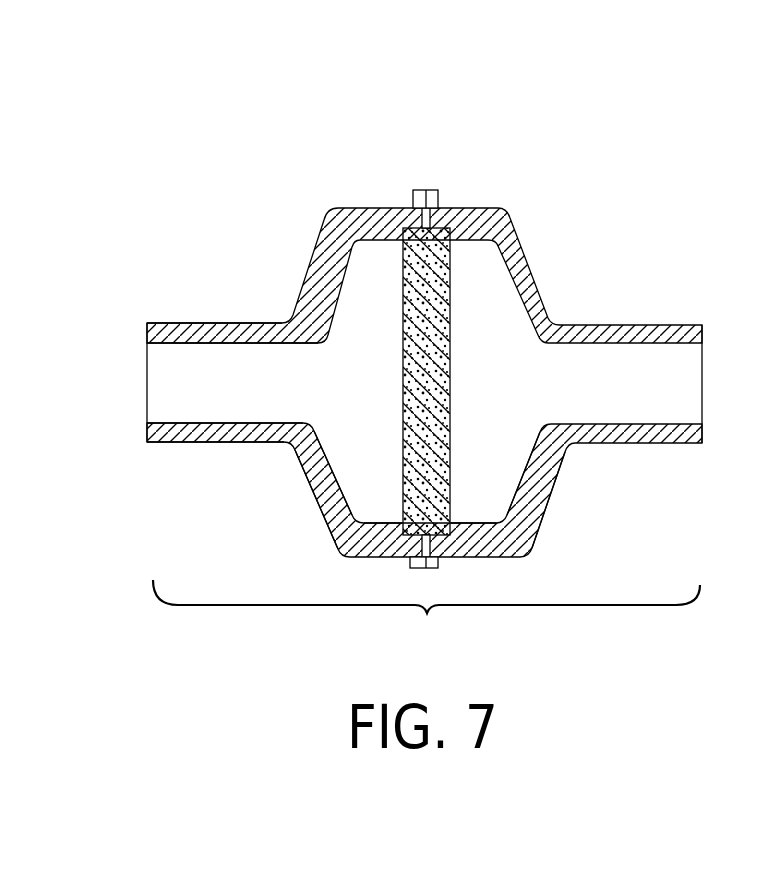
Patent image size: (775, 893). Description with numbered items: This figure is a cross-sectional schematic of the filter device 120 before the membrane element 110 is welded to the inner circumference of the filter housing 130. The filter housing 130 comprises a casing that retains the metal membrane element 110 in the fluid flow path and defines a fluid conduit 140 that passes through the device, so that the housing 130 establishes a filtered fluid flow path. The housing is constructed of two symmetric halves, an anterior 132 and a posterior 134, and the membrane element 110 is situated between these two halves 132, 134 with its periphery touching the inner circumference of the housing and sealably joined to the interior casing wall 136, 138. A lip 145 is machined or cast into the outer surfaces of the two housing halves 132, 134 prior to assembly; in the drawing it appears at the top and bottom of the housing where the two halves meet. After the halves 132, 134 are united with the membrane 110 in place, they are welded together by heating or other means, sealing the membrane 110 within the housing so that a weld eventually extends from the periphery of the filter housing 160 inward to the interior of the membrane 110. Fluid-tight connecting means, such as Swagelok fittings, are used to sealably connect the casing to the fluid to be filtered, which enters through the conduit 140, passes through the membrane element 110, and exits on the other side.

The filter device 120 is at (628, 135).
The membrane element 110 is at (402, 270).
The filter housing 130 is at (424, 539).
The anterior housing half 132 is at (313, 515).
The posterior housing half 134 is at (538, 507).
The interior casing wall 136 is at (380, 522).
The interior casing wall 138 is at (477, 520).
The fluid conduit 140 is at (212, 368).
The lip 145 is at (437, 188).
The periphery of the filter housing 160 is at (507, 210).